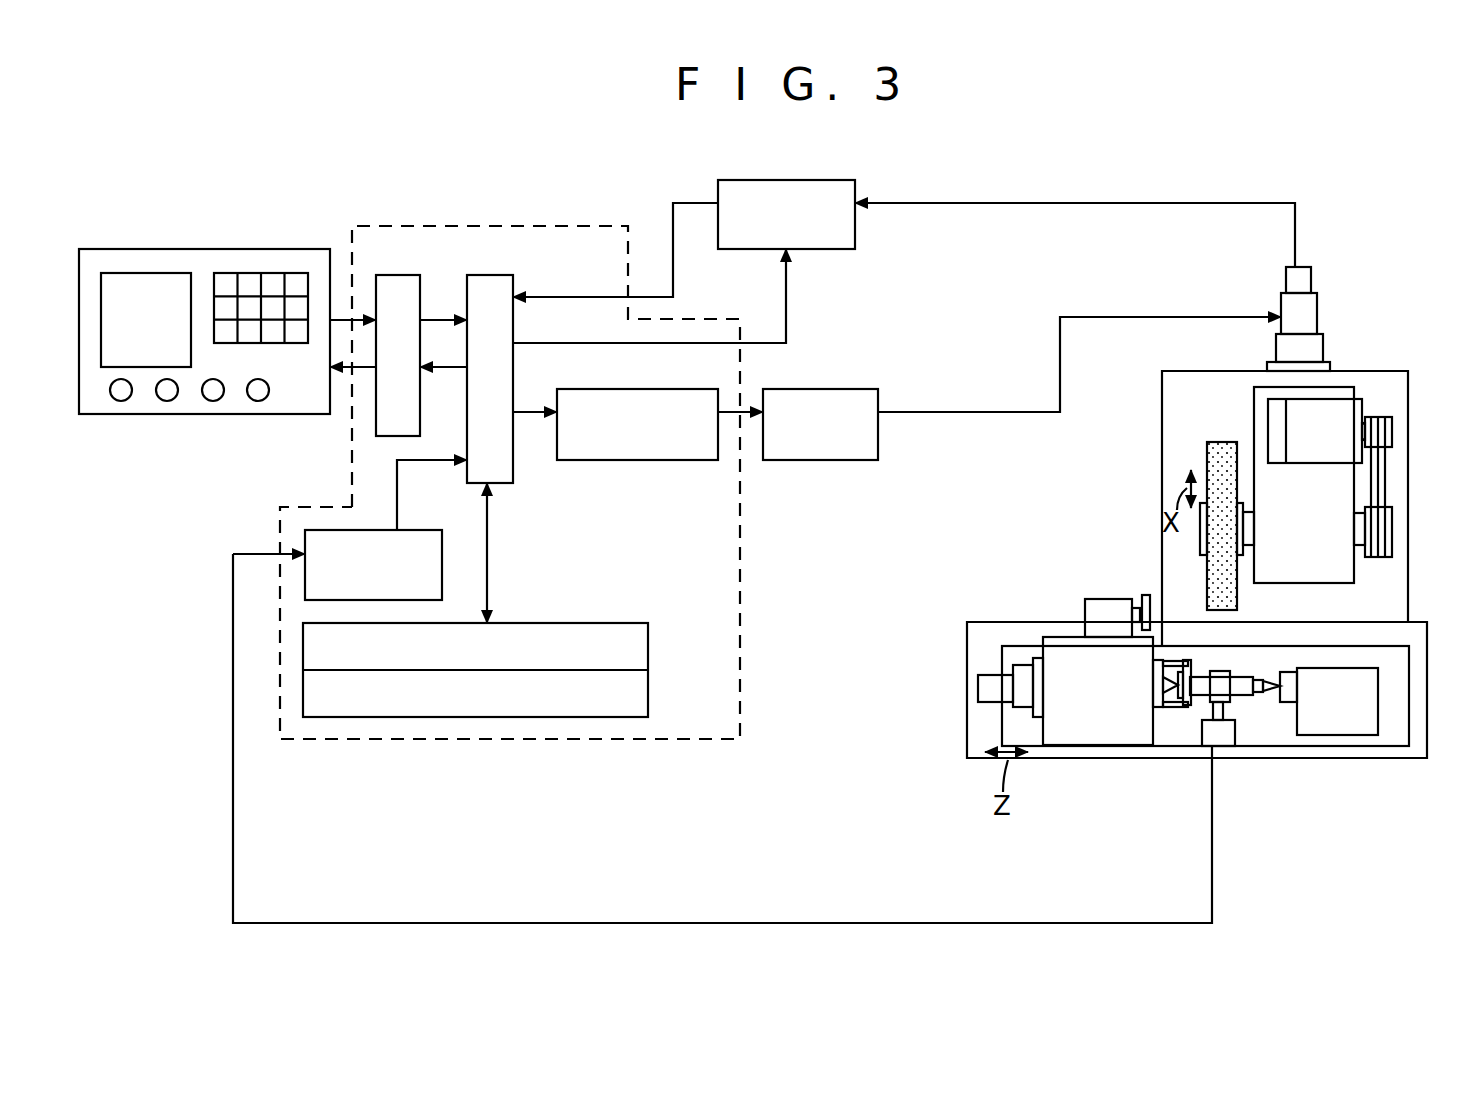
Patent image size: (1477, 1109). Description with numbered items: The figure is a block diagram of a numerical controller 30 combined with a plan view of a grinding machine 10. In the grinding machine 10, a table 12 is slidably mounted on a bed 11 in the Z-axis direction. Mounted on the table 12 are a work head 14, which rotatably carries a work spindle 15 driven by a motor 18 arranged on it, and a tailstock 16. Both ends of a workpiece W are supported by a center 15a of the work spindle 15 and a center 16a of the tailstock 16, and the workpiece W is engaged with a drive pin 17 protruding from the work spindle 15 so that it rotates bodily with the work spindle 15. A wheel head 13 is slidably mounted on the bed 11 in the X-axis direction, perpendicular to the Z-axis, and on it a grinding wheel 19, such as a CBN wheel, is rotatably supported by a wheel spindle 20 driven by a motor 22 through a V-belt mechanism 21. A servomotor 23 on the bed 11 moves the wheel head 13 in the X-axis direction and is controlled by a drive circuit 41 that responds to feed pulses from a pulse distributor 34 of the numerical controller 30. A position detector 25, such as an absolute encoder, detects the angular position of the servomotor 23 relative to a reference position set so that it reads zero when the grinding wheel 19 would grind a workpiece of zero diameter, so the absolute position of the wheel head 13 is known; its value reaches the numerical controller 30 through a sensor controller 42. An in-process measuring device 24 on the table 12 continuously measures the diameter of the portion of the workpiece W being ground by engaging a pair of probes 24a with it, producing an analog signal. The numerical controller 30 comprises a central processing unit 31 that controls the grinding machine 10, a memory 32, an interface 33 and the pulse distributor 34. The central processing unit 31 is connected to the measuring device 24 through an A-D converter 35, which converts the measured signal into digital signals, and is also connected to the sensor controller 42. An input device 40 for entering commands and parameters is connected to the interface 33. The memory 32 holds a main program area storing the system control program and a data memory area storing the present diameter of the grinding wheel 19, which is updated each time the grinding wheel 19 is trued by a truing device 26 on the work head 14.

The grinding machine 10 is at (1384, 316).
The bed 11 is at (1393, 584).
The table 12 is at (1398, 735).
The wheel head 13 is at (1332, 391).
The work head 14 is at (1096, 739).
The work spindle 15 is at (1158, 707).
The center 15a is at (1163, 685).
The tailstock 16 is at (1347, 725).
The center 16a is at (1272, 686).
The drive pin 17 is at (1175, 660).
The motor 18 is at (1022, 673).
The grinding wheel 19 is at (1228, 600).
The wheel spindle 20 is at (1247, 528).
The V-belt mechanism 21 is at (1393, 477).
The motor 22 is at (1323, 455).
The servomotor 23 is at (1308, 320).
The in-process measuring device 24 is at (1222, 735).
The probes 24a is at (1222, 671).
The position detector 25 is at (1305, 280).
The truing device 26 is at (1105, 610).
The numerical controller 30 is at (510, 226).
The central processing unit 31 is at (485, 275).
The memory 32 is at (585, 623).
The interface 33 is at (400, 275).
The pulse distributor 34 is at (671, 389).
The A-D converter 35 is at (418, 530).
The input device 40 is at (195, 249).
The drive circuit 41 is at (833, 389).
The sensor controller 42 is at (813, 180).
The workpiece W is at (1245, 695).